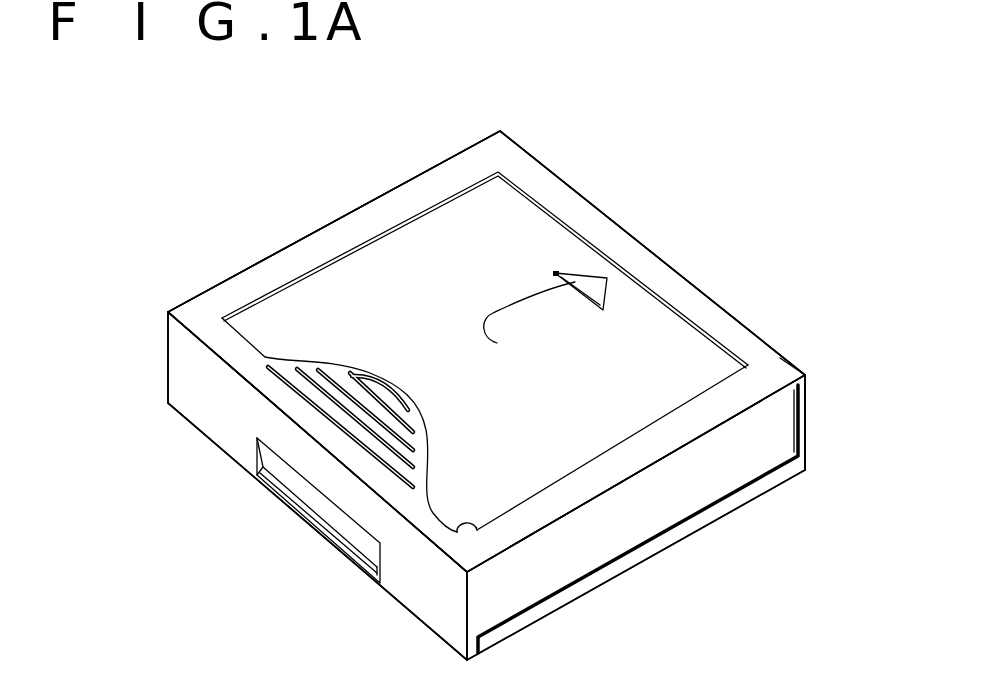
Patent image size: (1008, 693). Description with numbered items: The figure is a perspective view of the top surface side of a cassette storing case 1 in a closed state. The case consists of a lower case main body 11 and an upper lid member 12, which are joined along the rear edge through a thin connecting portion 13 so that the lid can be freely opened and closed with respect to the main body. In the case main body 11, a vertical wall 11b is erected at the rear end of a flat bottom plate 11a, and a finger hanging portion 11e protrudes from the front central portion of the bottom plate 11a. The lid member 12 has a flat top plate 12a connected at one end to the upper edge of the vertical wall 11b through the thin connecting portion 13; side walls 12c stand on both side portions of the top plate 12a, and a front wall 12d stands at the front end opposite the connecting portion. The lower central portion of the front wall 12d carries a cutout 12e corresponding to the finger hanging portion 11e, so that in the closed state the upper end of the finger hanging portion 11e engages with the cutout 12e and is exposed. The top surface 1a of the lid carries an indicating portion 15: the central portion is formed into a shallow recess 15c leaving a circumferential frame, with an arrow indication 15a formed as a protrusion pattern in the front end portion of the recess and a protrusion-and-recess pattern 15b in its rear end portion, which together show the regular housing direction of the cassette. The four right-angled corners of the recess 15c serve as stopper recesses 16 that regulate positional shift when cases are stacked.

The cassette storing case 1 is at (330, 141).
The top surface 1a is at (560, 227).
The case main body 11 is at (652, 569).
The bottom plate 11a is at (560, 610).
The vertical wall 11b is at (810, 414).
The finger hanging portion 11e is at (293, 508).
The lid member 12 is at (158, 358).
The top plate 12a is at (307, 244).
The side walls 12c is at (713, 475).
The front wall 12d is at (210, 410).
The cutout 12e is at (360, 540).
The thin connecting portion 13 is at (800, 368).
The indicating portion 15 is at (416, 401).
The arrow indication 15a is at (545, 317).
The protrusion-and-recess pattern 15b is at (413, 412).
The shallow recess 15c is at (533, 493).
The stopper recesses 16 is at (513, 172).